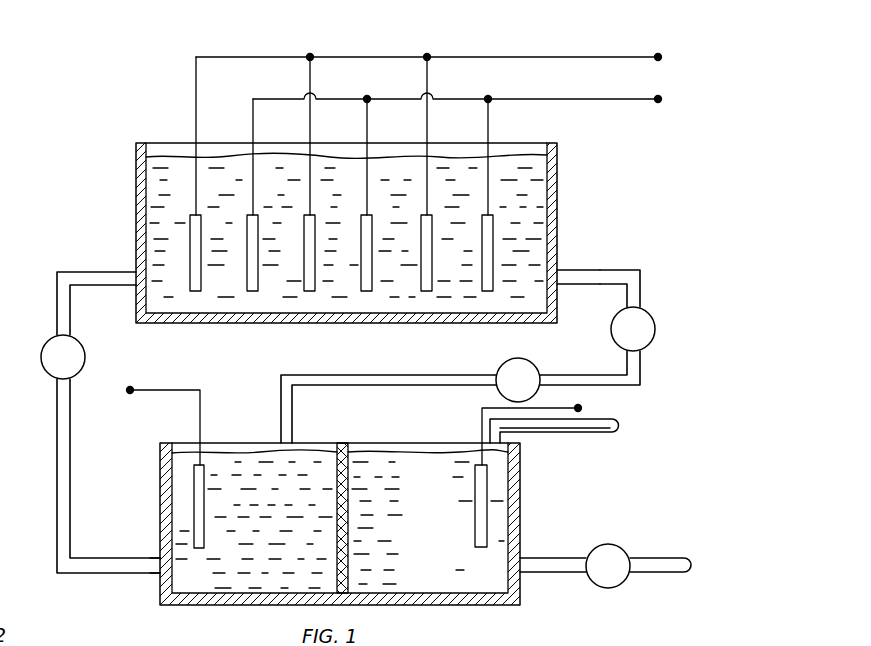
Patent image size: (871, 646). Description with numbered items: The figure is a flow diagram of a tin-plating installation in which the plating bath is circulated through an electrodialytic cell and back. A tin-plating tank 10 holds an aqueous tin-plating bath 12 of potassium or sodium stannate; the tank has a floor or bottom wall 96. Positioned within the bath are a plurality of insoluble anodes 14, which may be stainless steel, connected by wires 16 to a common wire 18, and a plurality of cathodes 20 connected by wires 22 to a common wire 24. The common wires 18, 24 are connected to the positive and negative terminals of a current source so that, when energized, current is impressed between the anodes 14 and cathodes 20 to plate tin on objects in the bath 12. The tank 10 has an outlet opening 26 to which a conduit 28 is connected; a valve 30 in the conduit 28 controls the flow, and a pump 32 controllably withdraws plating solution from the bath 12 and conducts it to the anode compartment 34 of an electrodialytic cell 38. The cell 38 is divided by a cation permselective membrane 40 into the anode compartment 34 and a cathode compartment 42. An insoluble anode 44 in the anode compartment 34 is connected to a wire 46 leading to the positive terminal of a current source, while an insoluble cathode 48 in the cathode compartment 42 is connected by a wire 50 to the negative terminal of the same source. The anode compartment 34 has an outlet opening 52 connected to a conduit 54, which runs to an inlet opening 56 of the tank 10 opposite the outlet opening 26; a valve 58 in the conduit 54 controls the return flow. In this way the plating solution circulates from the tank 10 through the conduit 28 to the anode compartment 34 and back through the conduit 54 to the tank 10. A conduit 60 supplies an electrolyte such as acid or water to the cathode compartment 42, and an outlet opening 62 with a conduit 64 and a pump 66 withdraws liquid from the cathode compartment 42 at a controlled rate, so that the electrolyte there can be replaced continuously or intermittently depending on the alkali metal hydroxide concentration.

The tin-plating tank 10 is at (590, 168).
The tin-plating bath 12 is at (170, 170).
The insoluble anodes 14 is at (201, 256).
The wires 16 is at (199, 88).
The common wire 18 is at (380, 57).
The cathodes 20 is at (258, 257).
The wires 22 is at (255, 125).
The common wire 24 is at (478, 99).
The outlet opening 26 is at (554, 275).
The conduit 28 is at (631, 270).
The valve 30 is at (656, 331).
The pump 32 is at (533, 367).
The anode compartment 34 is at (288, 538).
The electrodialytic cell 38 is at (529, 474).
The cation permselective membrane 40 is at (348, 524).
The cathode compartment 42 is at (432, 538).
The insoluble anode 44 is at (205, 523).
The wire 46 is at (150, 387).
The insoluble cathode 48 is at (488, 512).
The wire 50 is at (481, 432).
The outlet opening 52 is at (164, 566).
The conduit 54 is at (73, 527).
The inlet opening 56 is at (140, 278).
The valve 58 is at (41, 355).
The conduit 60 is at (569, 434).
The outlet opening 62 is at (516, 560).
The conduit 64 is at (570, 556).
The pump 66 is at (631, 556).
The bottom wall 96 is at (216, 305).